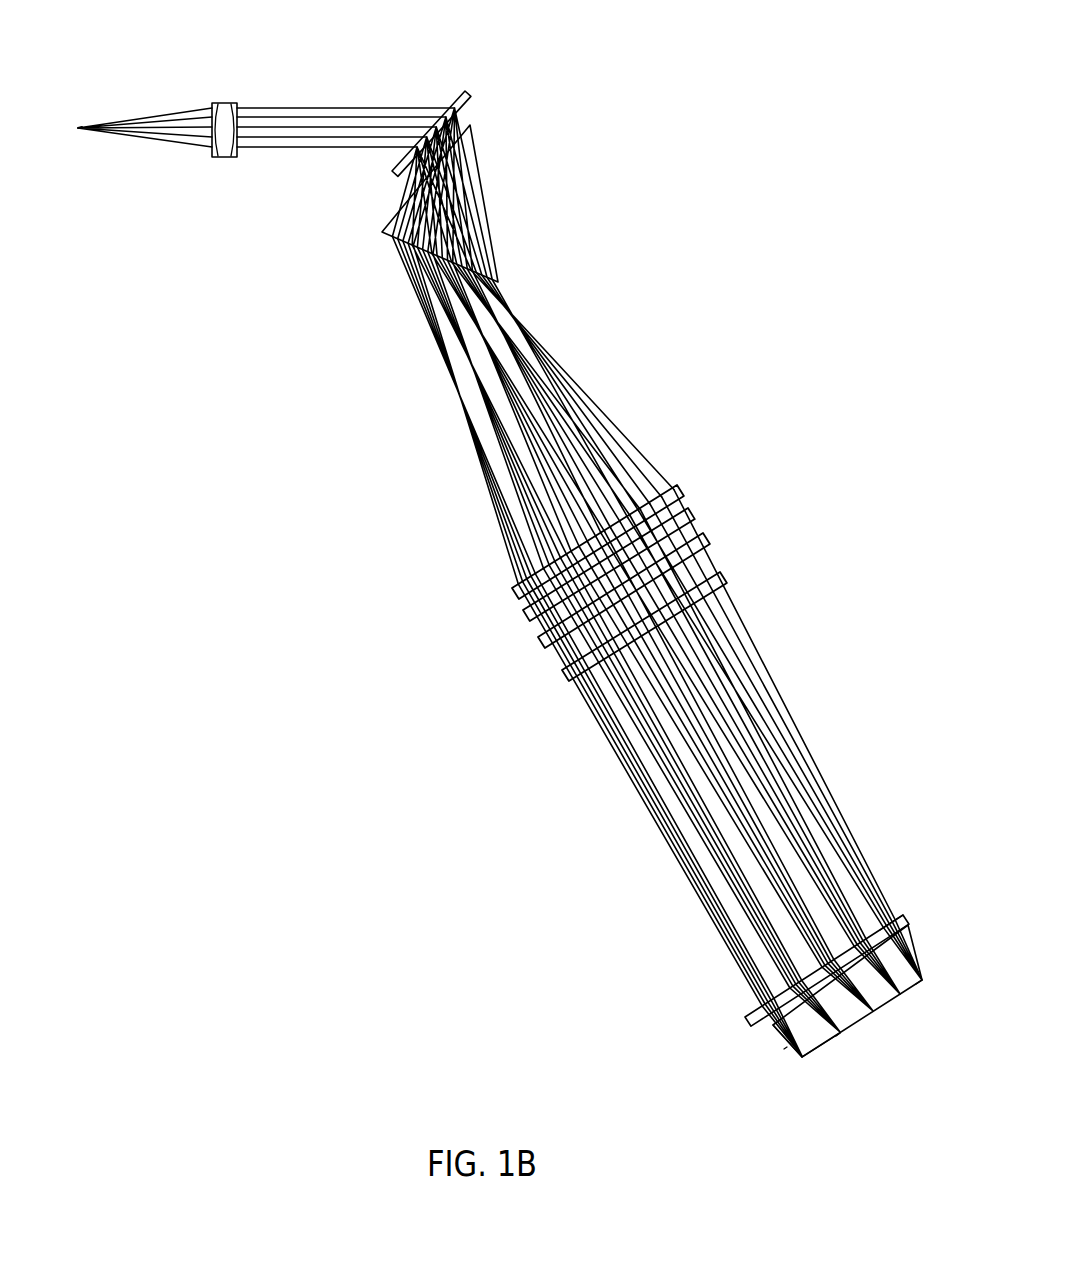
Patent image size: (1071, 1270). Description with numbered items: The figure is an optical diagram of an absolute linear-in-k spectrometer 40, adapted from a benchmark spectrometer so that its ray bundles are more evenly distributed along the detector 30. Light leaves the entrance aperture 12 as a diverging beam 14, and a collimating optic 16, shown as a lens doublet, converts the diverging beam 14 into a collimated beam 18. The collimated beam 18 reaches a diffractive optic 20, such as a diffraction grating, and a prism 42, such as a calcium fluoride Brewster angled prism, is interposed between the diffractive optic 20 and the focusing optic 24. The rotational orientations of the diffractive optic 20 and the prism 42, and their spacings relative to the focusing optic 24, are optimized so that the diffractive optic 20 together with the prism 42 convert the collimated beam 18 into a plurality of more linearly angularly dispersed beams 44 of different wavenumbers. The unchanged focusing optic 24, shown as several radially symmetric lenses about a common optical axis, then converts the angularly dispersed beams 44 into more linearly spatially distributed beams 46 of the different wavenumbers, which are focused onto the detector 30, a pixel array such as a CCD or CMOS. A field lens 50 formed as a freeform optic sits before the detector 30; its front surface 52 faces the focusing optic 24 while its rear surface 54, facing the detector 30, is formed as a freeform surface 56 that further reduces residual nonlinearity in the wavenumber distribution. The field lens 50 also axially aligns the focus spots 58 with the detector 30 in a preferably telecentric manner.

The entrance aperture 12 is at (79, 127).
The diverging beam 14 is at (186, 156).
The collimating optic 16 is at (223, 102).
The collimated beam 18 is at (319, 100).
The diffractive optic 20 is at (470, 93).
The focusing optic 24 is at (742, 582).
The detector 30 is at (880, 1007).
The absolute linear-in-k spectrometer 40 is at (640, 201).
The prism 42 is at (487, 195).
The angularly dispersed beams 44 is at (458, 407).
The spatially distributed beams 46 is at (680, 862).
The field lens 50 is at (905, 915).
The front surface 52 is at (752, 1012).
The rear surface 54 is at (782, 1045).
The freeform surface 56 is at (821, 1045).
The focus spots 58 is at (922, 975).